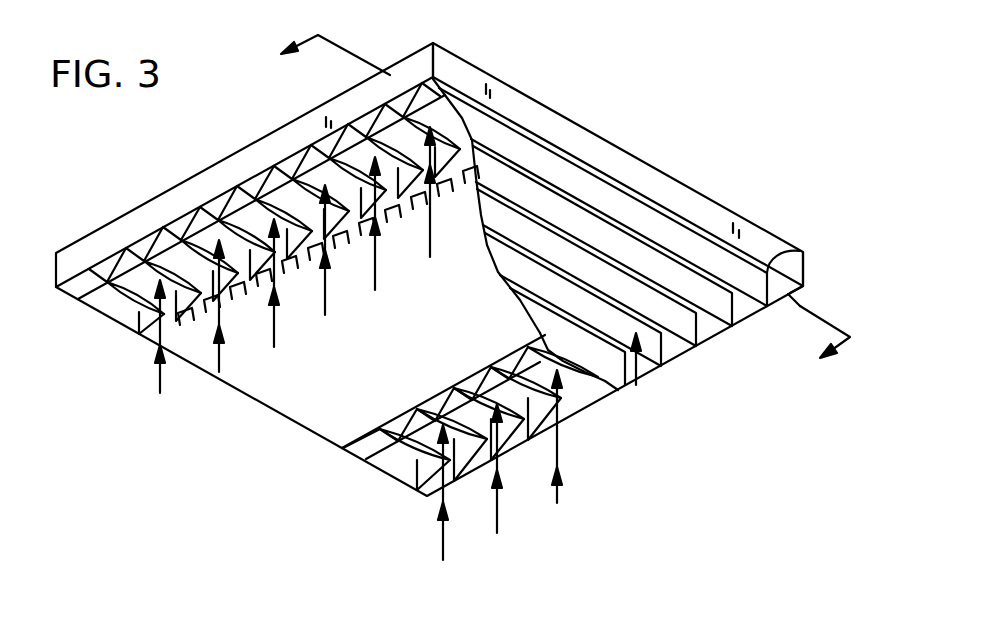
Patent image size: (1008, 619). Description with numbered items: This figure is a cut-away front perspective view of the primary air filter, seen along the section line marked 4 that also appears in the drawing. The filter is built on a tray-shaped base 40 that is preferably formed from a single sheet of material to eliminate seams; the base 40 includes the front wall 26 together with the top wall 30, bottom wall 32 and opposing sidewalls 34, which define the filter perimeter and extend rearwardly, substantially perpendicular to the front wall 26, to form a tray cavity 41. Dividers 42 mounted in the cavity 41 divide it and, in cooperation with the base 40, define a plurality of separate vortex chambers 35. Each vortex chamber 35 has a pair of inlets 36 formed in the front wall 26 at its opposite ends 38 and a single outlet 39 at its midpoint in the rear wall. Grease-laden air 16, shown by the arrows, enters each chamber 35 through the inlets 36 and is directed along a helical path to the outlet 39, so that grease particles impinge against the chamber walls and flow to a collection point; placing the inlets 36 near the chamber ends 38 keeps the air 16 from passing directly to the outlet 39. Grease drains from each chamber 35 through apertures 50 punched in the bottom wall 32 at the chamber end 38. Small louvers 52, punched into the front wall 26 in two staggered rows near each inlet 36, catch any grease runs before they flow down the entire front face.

The section line 4- 4 is at (558, 200).
The grease-laden air 16 is at (447, 556).
The front wall 26 is at (460, 338).
The top wall 30 is at (157, 198).
The bottom wall 32 is at (700, 350).
The sidewalls 34 is at (617, 147).
The vortex chambers 35 is at (790, 258).
The inlets 36 is at (207, 300).
The opposite ends 38 is at (440, 79).
The outlet 39 is at (590, 166).
The tray-shaped base 40 is at (805, 296).
The tray cavity 41 is at (640, 390).
The dividers 42 is at (720, 260).
The apertures 50 is at (628, 380).
The louvers 52 is at (323, 270).